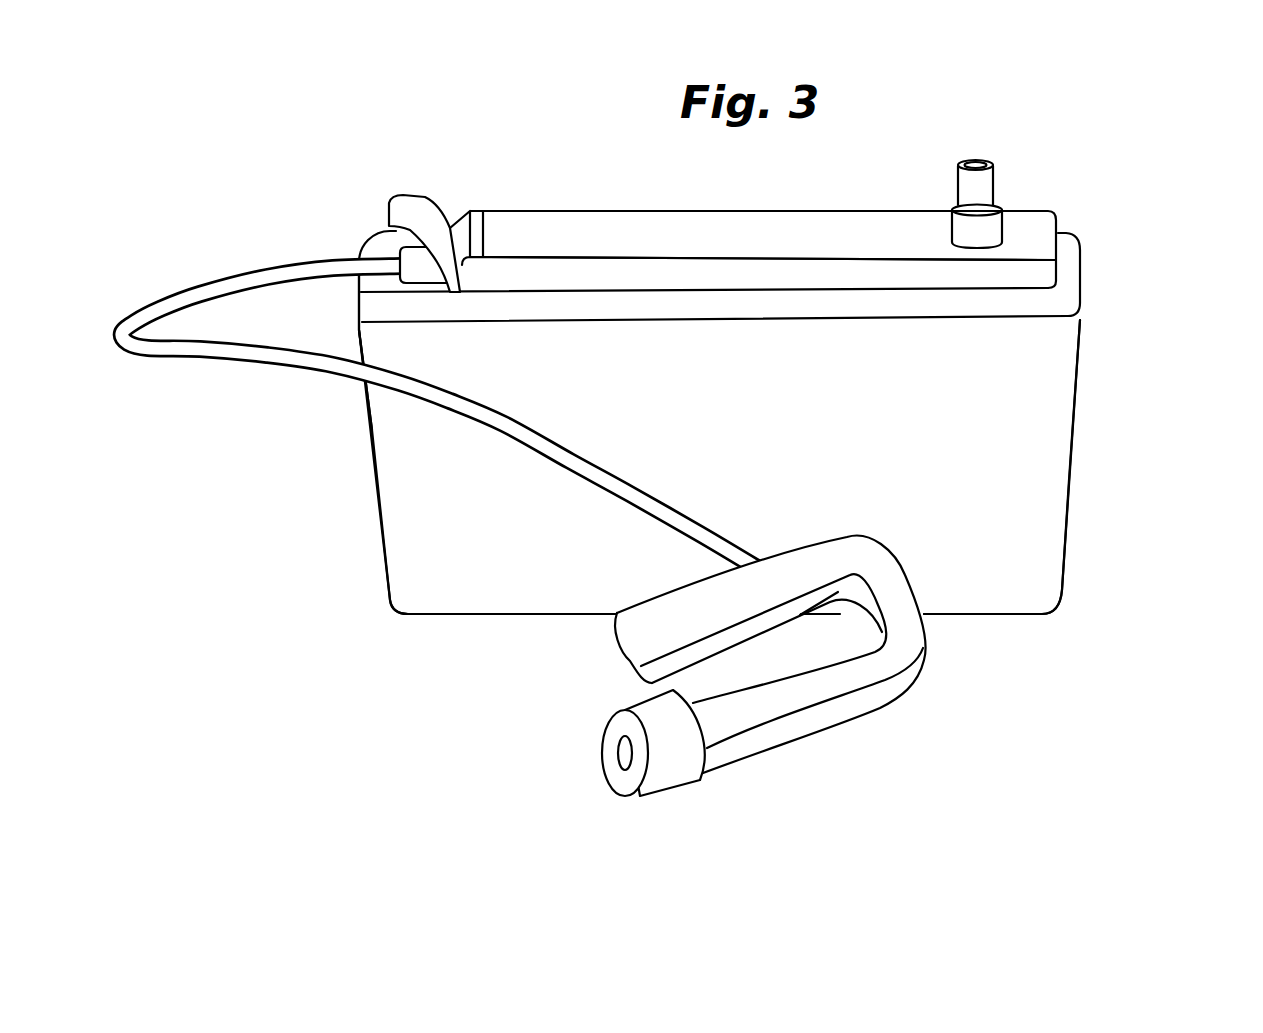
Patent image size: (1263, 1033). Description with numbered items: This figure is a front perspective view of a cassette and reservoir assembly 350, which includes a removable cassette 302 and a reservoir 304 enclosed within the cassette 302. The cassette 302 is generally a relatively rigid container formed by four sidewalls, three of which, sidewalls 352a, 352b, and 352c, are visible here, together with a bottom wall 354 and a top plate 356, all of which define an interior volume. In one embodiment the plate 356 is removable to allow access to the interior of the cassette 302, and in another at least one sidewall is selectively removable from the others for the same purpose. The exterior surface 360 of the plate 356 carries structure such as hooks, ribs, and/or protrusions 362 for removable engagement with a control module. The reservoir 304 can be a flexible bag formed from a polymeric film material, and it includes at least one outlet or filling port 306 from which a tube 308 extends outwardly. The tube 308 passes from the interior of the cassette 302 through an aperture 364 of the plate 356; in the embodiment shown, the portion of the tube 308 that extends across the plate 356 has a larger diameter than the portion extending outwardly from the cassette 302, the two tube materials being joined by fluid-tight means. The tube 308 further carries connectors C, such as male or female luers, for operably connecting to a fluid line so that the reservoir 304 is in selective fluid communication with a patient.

The cassette and reservoir assembly 350 is at (1120, 276).
The removable cassette 302 is at (392, 583).
The reservoir 304 is at (430, 508).
The outlet or filling port 306 is at (1037, 220).
The tube 308 is at (530, 250).
The sidewall 352a is at (1017, 412).
The sidewall 352b is at (1063, 523).
The sidewall 352c is at (368, 425).
The bottom wall 354 is at (980, 614).
The top plate 356 is at (915, 222).
The exterior surface 360 is at (752, 272).
The protrusions 362 is at (407, 212).
The aperture 364 is at (1018, 250).
The connectors C is at (592, 765).